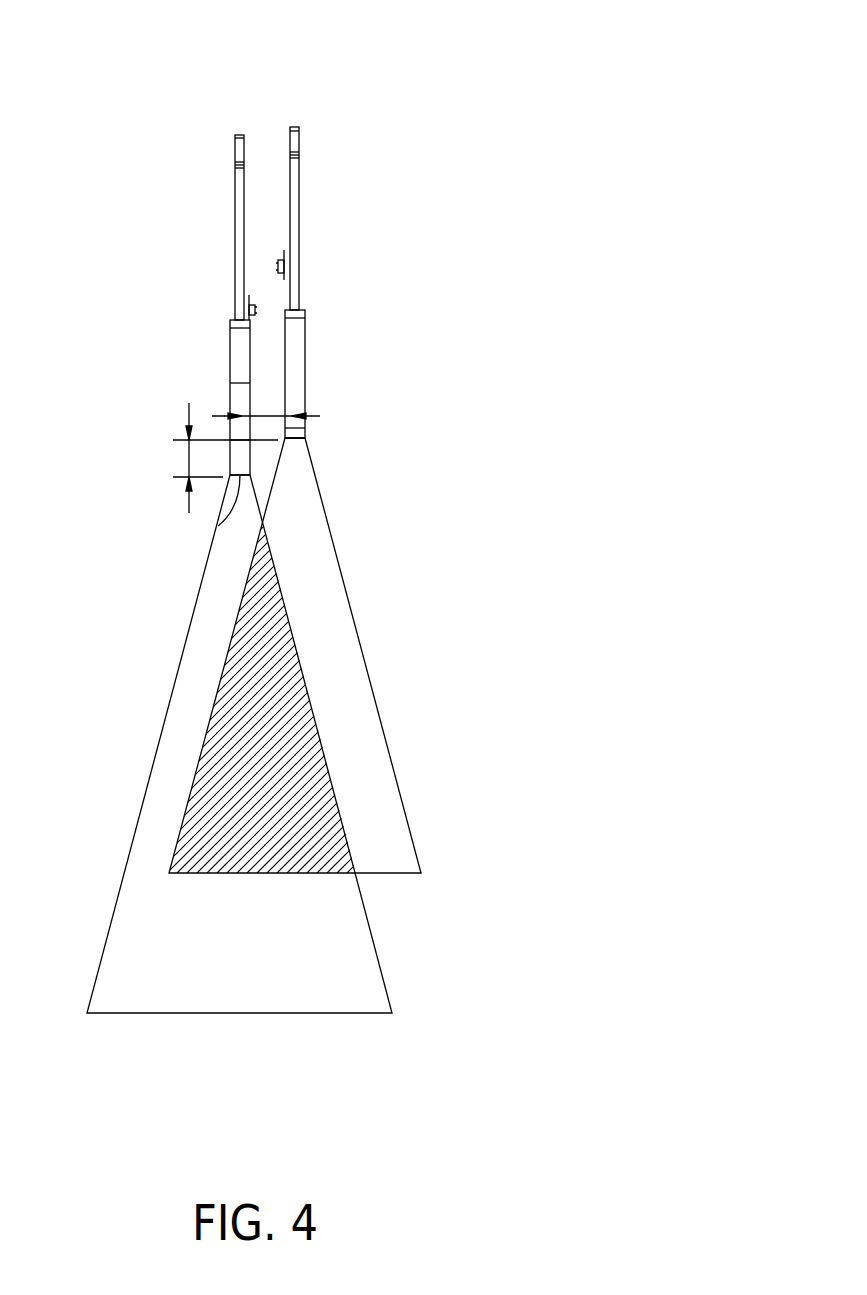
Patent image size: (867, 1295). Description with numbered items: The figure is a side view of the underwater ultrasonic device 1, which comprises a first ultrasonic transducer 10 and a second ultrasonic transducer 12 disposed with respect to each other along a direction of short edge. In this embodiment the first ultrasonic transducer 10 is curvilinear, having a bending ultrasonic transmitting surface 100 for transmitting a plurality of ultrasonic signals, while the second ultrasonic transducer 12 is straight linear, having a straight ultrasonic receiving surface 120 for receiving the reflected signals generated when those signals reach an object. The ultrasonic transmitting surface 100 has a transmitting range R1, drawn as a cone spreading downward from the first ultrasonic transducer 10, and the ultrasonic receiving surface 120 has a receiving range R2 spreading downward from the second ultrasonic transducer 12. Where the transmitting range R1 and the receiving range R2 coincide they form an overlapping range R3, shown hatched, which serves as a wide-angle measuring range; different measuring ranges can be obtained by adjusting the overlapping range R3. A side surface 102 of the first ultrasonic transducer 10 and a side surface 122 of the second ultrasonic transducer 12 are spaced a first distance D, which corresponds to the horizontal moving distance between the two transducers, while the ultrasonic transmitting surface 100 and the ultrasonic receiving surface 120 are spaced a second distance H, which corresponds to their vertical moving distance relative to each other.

The underwater ultrasonic device 1 is at (444, 72).
The first ultrasonic transducer 10 is at (230, 352).
The ultrasonic transmitting surface 100 is at (222, 526).
The side surface 102 is at (248, 400).
The second ultrasonic transducer 12 is at (303, 338).
The ultrasonic receiving surface 120 is at (307, 452).
The side surface 122 is at (288, 362).
The transmitting range R1 is at (168, 707).
The receiving range R2 is at (356, 623).
The overlapping range R3 is at (281, 800).
The first distance D is at (266, 402).
The second distance H is at (216, 458).